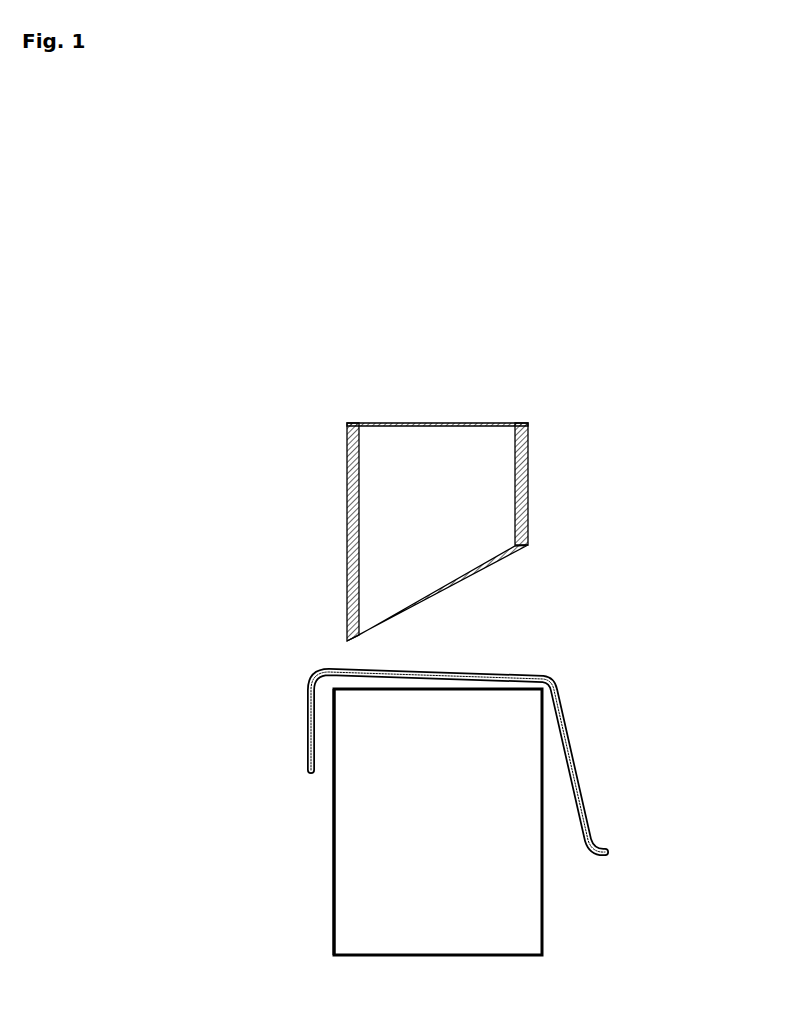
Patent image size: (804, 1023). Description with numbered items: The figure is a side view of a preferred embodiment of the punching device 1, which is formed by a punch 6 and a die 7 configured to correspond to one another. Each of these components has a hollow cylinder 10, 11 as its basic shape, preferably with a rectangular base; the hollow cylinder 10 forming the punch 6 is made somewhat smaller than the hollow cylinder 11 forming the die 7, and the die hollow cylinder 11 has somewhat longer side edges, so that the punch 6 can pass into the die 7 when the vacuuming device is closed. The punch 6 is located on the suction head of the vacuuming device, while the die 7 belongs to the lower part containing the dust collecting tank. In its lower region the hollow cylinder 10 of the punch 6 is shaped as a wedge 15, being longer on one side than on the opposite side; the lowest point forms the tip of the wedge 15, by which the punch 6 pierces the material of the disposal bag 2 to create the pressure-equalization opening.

The punching device 1 is at (436, 319).
The disposal bag 2 is at (580, 766).
The punch 6 is at (485, 471).
The die 7 is at (519, 885).
The hollow cylinder 10 is at (373, 487).
The hollow cylinder 11 is at (353, 858).
The wedge 15 is at (373, 608).